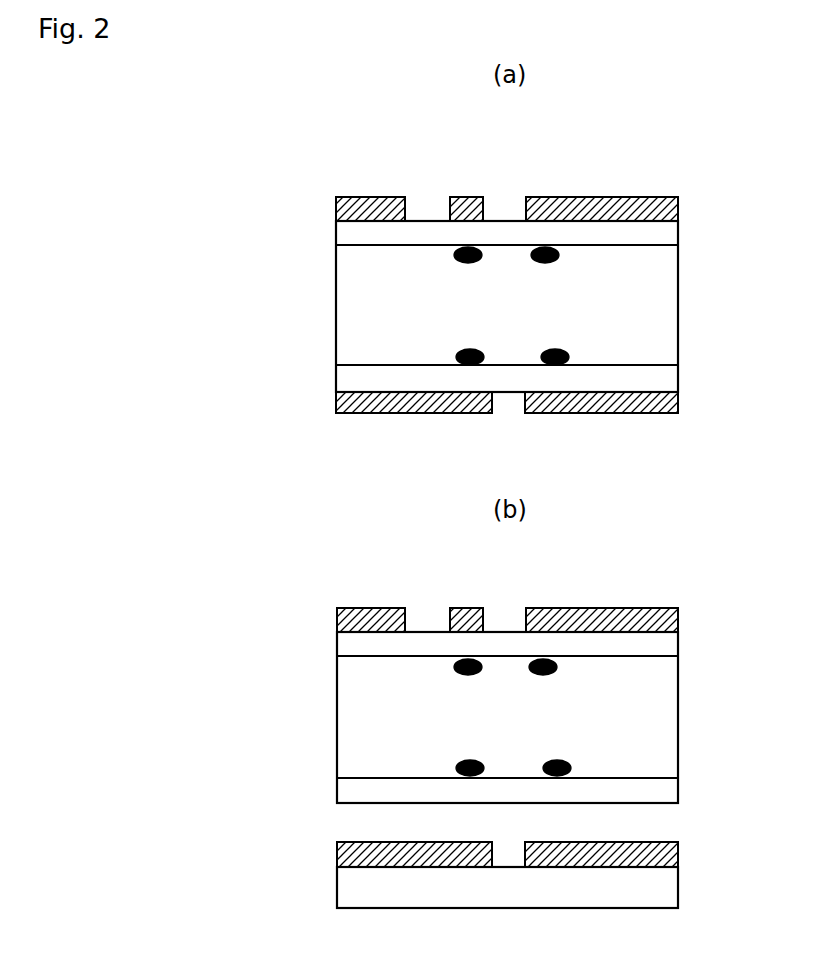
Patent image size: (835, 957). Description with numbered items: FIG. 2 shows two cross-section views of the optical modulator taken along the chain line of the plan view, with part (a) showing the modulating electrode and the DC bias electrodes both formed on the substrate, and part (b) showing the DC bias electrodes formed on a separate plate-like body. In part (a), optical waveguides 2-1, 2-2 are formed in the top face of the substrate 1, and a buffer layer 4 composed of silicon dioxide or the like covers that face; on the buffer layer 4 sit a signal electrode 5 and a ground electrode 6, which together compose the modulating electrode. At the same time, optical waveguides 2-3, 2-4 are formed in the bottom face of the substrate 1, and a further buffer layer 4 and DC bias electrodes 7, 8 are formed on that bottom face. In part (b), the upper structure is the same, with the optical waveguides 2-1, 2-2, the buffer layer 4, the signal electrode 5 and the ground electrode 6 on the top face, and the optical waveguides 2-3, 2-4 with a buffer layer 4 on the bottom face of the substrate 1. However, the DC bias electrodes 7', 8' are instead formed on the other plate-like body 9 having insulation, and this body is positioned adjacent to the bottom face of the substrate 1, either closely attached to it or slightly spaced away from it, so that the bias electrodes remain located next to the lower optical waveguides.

The substrate 1 is at (622, 305).
The optical waveguide 2-1 is at (553, 250).
The optical waveguide 2-2 is at (460, 250).
The optical waveguide 2-3 is at (472, 364).
The optical waveguide 2-4 is at (555, 364).
The buffer layer 4 is at (358, 229).
The signal electrode 5 is at (465, 197).
The ground electrode 6 is at (577, 197).
The DC bias electrode 7 is at (407, 430).
The DC bias electrode 8 is at (627, 423).
The DC bias electrode 7' is at (389, 864).
The DC bias electrode 8' is at (640, 840).
The plate-like body 9 is at (635, 895).